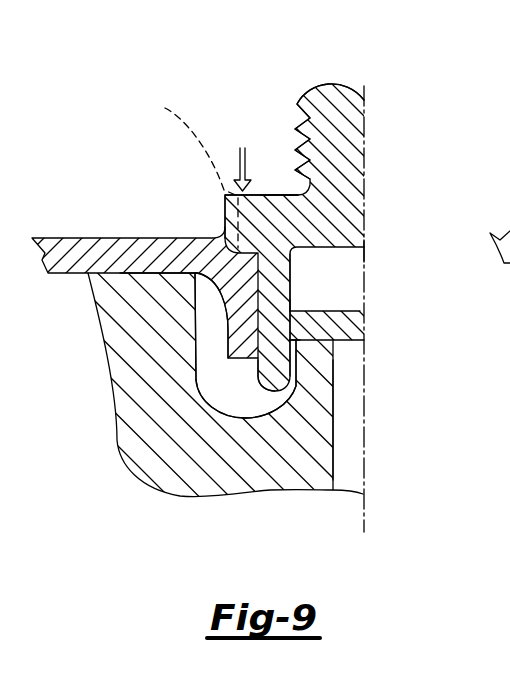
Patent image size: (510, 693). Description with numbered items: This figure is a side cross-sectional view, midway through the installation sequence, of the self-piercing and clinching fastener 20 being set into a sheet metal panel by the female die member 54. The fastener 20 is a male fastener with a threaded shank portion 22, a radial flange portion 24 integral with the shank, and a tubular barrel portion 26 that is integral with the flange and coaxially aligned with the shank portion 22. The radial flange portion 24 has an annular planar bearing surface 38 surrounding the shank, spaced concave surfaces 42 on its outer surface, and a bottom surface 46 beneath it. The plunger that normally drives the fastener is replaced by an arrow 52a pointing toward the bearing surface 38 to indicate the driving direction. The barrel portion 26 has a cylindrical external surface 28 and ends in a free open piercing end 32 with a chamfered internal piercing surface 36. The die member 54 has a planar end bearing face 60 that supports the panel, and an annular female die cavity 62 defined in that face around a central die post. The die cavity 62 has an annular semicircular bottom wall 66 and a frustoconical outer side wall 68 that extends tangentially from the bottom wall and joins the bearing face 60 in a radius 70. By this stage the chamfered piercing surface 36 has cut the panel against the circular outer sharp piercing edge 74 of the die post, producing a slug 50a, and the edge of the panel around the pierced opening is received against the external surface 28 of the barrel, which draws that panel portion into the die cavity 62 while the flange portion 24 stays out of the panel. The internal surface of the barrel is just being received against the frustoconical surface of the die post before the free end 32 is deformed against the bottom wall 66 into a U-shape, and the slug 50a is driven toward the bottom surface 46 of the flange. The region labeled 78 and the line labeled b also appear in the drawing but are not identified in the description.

The self-piercing and clinching fastener 20 is at (307, 97).
The threaded shank portion 22 is at (351, 162).
The radial flange portion 24 is at (225, 208).
The tubular barrel portion 26 is at (293, 272).
The cylindrical external surface 28 is at (293, 309).
The free open piercing end 32 is at (258, 382).
The chamfered internal piercing surface 36 is at (287, 390).
The annular planar bearing surface 38 is at (266, 195).
The concave surfaces 42 is at (189, 169).
The bottom surface of the radial flange portion 46 is at (372, 256).
The slug 50a is at (352, 326).
The arrow 52a is at (246, 158).
The female die member 54 is at (175, 434).
The planar end bearing face 60 is at (121, 261).
The annular female die cavity 62 is at (235, 389).
The annular semicircular bottom wall 66 is at (225, 411).
The frustoconical outer side wall 68 is at (206, 318).
The radius 70 is at (172, 282).
The circular outer sharp piercing edge 74 is at (295, 344).
The recess 78 is at (364, 447).
The axis b is at (366, 194).